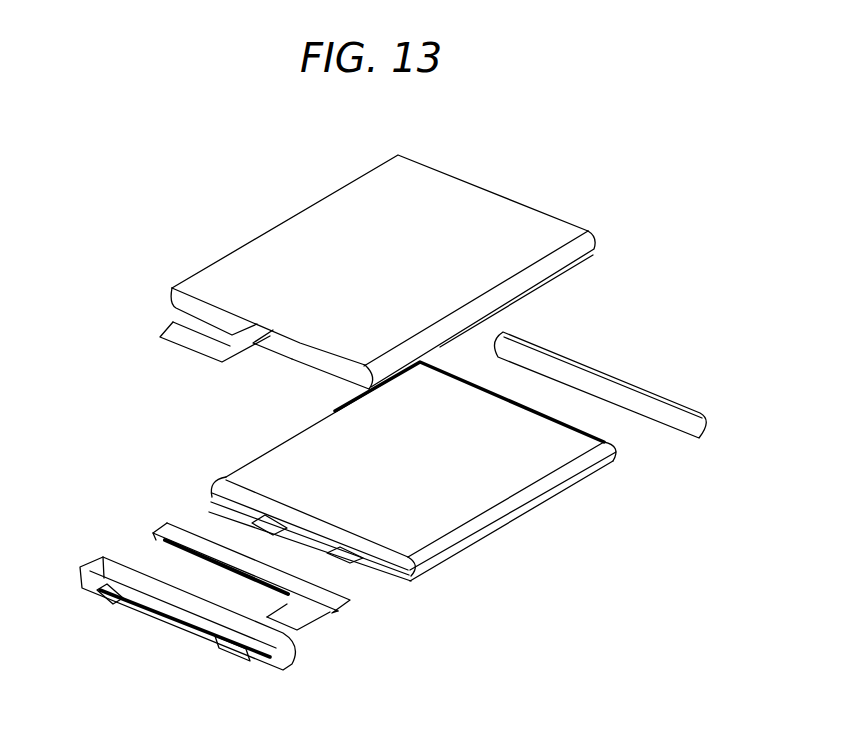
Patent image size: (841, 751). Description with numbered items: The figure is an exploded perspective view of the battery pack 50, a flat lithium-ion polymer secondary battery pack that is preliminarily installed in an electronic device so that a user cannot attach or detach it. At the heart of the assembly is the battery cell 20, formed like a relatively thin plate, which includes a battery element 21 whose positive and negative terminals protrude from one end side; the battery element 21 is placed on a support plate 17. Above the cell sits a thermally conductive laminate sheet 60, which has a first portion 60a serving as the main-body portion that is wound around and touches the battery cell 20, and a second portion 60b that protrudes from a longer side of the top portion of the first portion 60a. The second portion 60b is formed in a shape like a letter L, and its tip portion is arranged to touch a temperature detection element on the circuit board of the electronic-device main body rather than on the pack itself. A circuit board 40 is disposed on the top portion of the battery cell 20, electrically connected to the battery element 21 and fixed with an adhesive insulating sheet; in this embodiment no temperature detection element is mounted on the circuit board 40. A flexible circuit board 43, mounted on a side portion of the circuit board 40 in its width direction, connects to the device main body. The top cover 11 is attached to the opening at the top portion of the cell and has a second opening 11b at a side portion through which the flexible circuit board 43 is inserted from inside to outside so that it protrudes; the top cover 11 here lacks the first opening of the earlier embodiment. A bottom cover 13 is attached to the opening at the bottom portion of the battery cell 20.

The thermally conductive laminate sheet 60 is at (351, 265).
The first portion 60a is at (287, 227).
The second portion 60b is at (200, 344).
The bottom cover 13 is at (605, 375).
The battery cell 20 is at (418, 471).
The battery element 21 is at (258, 473).
The support plate 17 is at (561, 488).
The circuit board 40 is at (221, 588).
The flexible circuit board 43 is at (307, 610).
The top cover 11 is at (166, 626).
The second opening 11b is at (253, 655).
The battery pack 50 is at (589, 649).